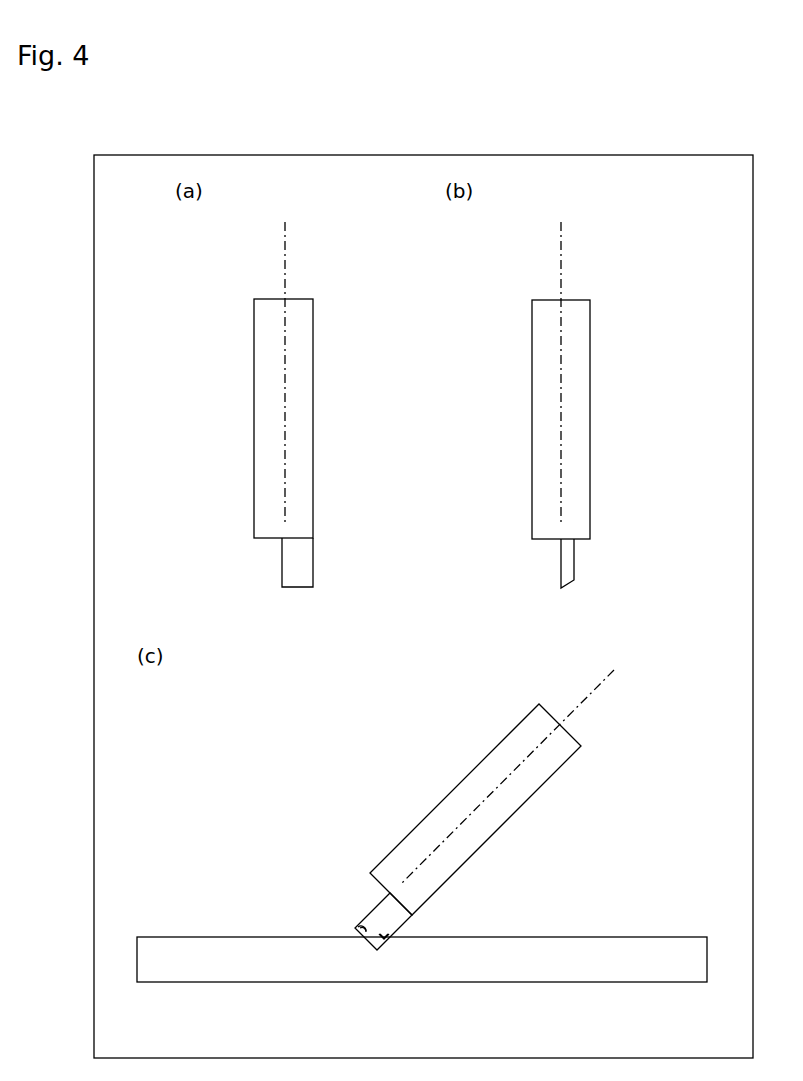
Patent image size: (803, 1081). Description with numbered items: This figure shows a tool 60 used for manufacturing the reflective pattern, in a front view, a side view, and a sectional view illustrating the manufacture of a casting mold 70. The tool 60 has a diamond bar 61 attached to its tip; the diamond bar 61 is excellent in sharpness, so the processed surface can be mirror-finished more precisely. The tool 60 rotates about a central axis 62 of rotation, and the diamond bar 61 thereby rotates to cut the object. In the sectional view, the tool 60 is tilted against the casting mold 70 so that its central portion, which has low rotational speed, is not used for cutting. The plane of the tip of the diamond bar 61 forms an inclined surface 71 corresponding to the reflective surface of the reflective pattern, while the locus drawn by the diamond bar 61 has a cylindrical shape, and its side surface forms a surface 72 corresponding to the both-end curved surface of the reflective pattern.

The tool 60 is at (310, 413).
The diamond bar 61 is at (308, 560).
The central axis of rotation 62 is at (289, 248).
The casting mold 70 is at (593, 975).
The inclined surface 71 is at (363, 937).
The surface corresponding to the both-end curved surface 72 is at (384, 937).